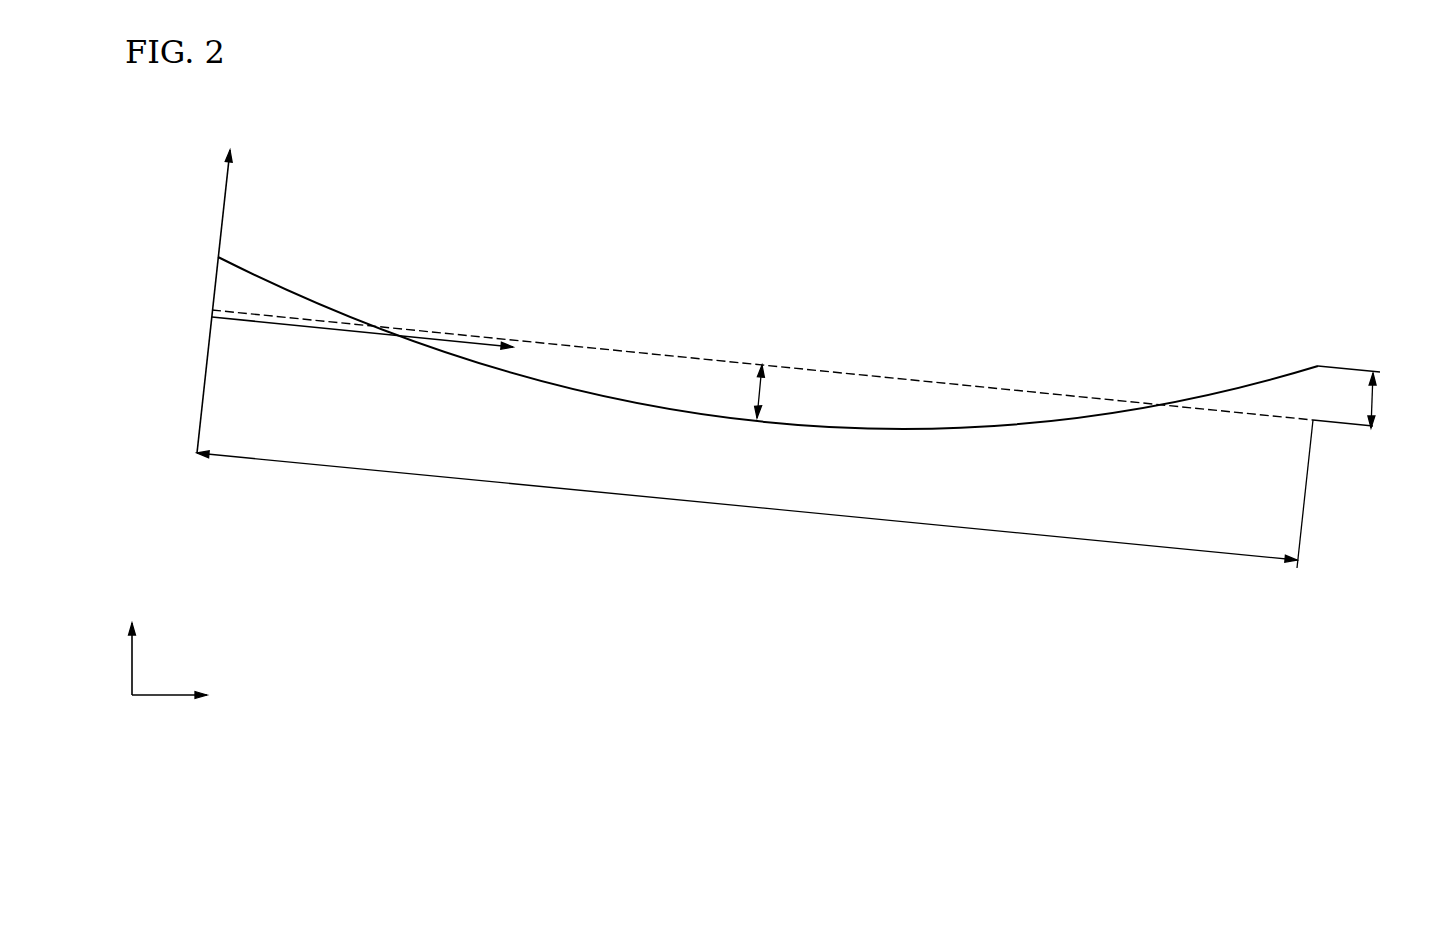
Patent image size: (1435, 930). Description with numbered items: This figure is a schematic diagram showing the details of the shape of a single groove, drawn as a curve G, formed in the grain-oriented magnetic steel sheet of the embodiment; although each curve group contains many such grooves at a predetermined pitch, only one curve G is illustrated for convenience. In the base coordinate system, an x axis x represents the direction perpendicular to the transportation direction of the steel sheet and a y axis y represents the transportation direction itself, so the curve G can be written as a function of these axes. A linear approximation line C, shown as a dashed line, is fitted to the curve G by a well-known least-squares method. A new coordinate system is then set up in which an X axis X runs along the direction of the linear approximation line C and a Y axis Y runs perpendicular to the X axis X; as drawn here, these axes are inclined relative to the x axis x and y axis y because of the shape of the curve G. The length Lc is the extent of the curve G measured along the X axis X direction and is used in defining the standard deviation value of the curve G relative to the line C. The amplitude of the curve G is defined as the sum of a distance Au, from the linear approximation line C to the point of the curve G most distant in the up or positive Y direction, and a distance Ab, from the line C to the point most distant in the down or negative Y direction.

The curve G is at (287, 290).
The linear approximation line C is at (923, 383).
The distance Ab is at (775, 391).
The distance Au is at (1361, 397).
The length of the curve Lc is at (755, 494).
The X axis X is at (370, 333).
The Y axis Y is at (216, 287).
The x axis x is at (177, 695).
The y axis y is at (309, 645).